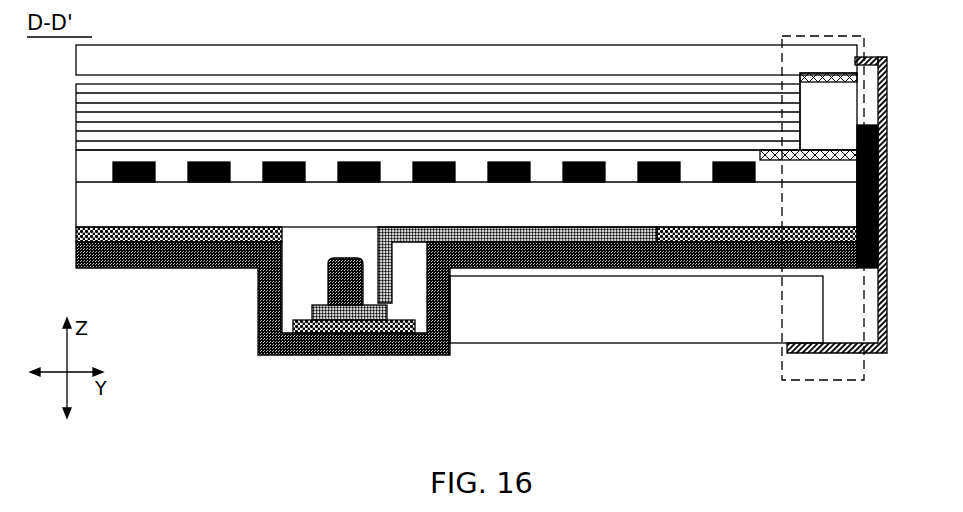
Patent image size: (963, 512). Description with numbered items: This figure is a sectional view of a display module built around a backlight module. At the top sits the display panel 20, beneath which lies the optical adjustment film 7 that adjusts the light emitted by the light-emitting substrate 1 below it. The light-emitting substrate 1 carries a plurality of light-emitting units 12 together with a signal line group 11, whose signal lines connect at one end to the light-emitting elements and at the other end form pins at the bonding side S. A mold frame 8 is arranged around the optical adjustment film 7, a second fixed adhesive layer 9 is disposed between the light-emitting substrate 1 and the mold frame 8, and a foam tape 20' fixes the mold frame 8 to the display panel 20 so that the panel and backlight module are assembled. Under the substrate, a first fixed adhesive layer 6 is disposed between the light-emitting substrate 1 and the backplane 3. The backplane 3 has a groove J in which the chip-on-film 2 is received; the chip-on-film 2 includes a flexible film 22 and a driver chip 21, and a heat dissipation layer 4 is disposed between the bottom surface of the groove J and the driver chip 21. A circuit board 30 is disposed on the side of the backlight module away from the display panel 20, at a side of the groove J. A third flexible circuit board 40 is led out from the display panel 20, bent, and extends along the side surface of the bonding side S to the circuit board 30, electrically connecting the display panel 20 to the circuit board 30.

The display panel 20 is at (466, 47).
The foam tape 20' is at (888, 69).
The optical adjustment film 7 is at (75, 84).
The light-emitting substrate 1 is at (75, 150).
The light-emitting unit 12 is at (582, 182).
The mold frame 8 is at (848, 122).
The second fixed adhesive layer 9 is at (879, 146).
The signal line group 11 is at (850, 193).
The first fixed adhesive layer 6 is at (698, 240).
The backplane 3 is at (437, 352).
The groove J is at (298, 270).
The chip-on-film 2 is at (365, 352).
The driver chip 21 is at (348, 290).
The flexible film 22 is at (385, 310).
The heat dissipation layer 4 is at (323, 325).
The circuit board 30 is at (640, 310).
The third flexible circuit board 40 is at (879, 268).
The bonding side S is at (812, 383).